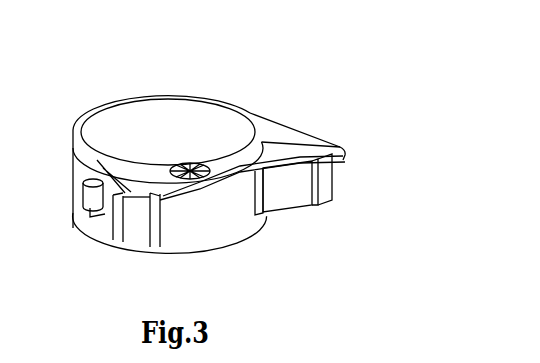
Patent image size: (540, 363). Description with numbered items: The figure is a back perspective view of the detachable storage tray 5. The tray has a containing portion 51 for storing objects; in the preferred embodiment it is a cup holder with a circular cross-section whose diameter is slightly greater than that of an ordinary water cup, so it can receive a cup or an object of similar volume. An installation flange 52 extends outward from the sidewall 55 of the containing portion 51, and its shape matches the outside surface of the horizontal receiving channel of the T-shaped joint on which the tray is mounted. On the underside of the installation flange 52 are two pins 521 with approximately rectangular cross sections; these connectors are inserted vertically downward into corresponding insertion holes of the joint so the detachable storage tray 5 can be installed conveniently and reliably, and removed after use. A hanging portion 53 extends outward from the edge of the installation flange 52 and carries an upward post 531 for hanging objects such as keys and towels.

The detachable storage tray 5 is at (262, 82).
The containing portion 51 is at (175, 128).
The installation flange 52 is at (260, 150).
The pin 521 is at (205, 213).
The hanging portion 53 is at (100, 223).
The upward post 531 is at (103, 192).
The sidewall 55 is at (77, 162).